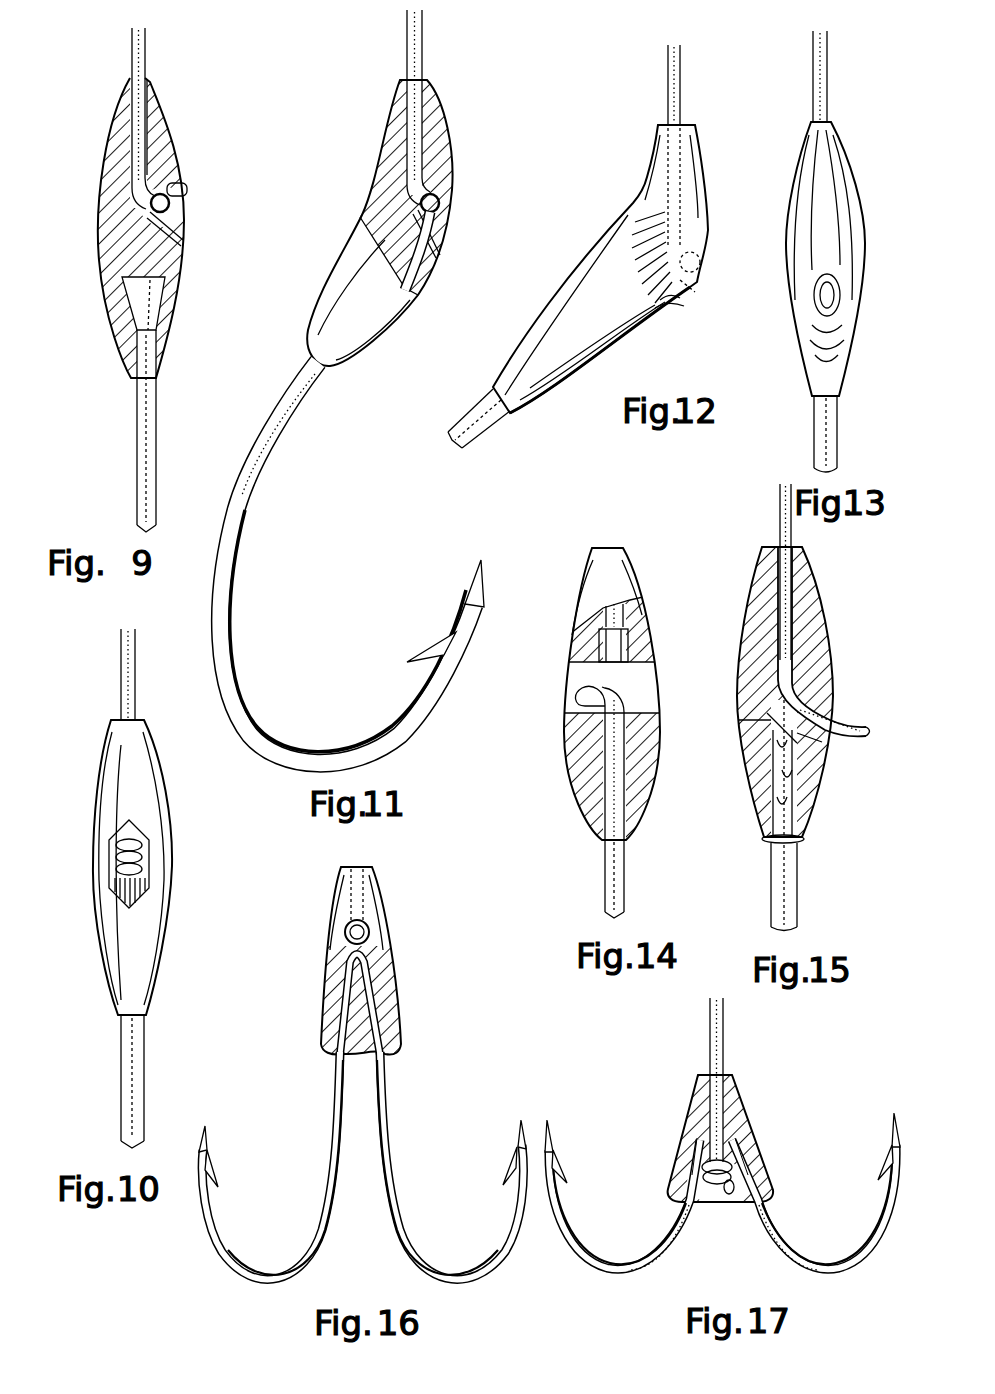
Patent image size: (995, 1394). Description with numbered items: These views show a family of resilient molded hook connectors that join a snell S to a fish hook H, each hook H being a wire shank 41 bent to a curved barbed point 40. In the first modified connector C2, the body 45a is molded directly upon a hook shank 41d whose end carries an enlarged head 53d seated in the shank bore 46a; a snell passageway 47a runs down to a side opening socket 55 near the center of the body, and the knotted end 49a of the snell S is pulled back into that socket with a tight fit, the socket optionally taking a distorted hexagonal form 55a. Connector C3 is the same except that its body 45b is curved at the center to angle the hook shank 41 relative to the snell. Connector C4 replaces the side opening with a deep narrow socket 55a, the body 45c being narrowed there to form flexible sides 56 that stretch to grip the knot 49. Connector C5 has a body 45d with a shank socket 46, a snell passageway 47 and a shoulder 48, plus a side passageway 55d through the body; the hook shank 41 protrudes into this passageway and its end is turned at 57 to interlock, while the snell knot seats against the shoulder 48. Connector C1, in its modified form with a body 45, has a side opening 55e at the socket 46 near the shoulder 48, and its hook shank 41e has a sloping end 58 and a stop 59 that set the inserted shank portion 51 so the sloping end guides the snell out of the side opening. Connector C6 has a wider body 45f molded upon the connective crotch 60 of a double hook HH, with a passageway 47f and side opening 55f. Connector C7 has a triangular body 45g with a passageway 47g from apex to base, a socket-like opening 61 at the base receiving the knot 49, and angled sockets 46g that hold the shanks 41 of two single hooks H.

In FIG. 9, the snell S is at (132, 50).
In FIG. 10, the snell S is at (121, 677).
In FIG. 11, the snell S is at (408, 47).
In FIG. 12, the snell S is at (668, 77).
In FIG. 13, the snell S is at (813, 66).
In FIG. 15, the snell S is at (779, 515).
In FIG. 17, the snell S is at (710, 1033).
In FIG. 9, the connector C2 is at (163, 100).
In FIG. 10, the connector C2 is at (92, 770).
In FIG. 11, the connector C3 is at (357, 213).
In FIG. 12, the connector C4 is at (650, 158).
In FIG. 13, the connector C4 is at (796, 178).
In FIG. 14, the connector C5 is at (564, 589).
In FIG. 15, the connector C1 is at (746, 586).
In FIG. 16, the connector C6 is at (335, 906).
In FIG. 17, the connector C7 is at (688, 1108).
In FIG. 11, the hook H is at (352, 487).
In FIG. 17, the hook H is at (722, 1192).
In FIG. 16, the double hook HH is at (403, 1242).
In FIG. 11, the barbed point 40 is at (400, 713).
In FIG. 17, the barbed point 40 is at (563, 1217).
In FIG. 11, the shank 41 is at (280, 423).
In FIG. 12, the shank 41 is at (491, 420).
In FIG. 13, the shank 41 is at (840, 442).
In FIG. 14, the shank 41 is at (618, 882).
In FIG. 17, the shank 41 is at (683, 1203).
In FIG. 9, the hook shank 41d is at (157, 435).
In FIG. 10, the hook shank 41d is at (145, 1042).
In FIG. 15, the hook shank 41e is at (790, 892).
In FIG. 15, the body 45 is at (746, 671).
In FIG. 9, the connector body 45a is at (110, 201).
In FIG. 10, the connector body 45a is at (150, 787).
In FIG. 11, the body 45b is at (340, 284).
In FIG. 12, the body 45c is at (607, 262).
In FIG. 13, the body 45c is at (800, 246).
In FIG. 14, the body 45d is at (572, 769).
In FIG. 16, the body 45f is at (331, 969).
In FIG. 17, the triangular body 45g is at (697, 1127).
In FIG. 14, the socket 46 is at (575, 649).
In FIG. 15, the socket 46 is at (818, 684).
In FIG. 9, the shank bore 46a is at (160, 342).
In FIG. 17, the angled socket 46g is at (683, 1170).
In FIG. 14, the snell passageway 47 is at (630, 608).
In FIG. 15, the snell passageway 47 is at (793, 567).
In FIG. 9, the snell passageway 47a is at (150, 125).
In FIG. 11, the snell passageway 47a is at (440, 112).
In FIG. 12, the snell passageway 47a is at (700, 131).
In FIG. 16, the passageway 47f is at (370, 882).
In FIG. 17, the passageway 47g is at (735, 1090).
In FIG. 14, the shoulder 48 is at (632, 641).
In FIG. 15, the shoulder 48 is at (820, 657).
In FIG. 17, the knot 49 is at (717, 1193).
In FIG. 9, the knotted end 49a is at (166, 190).
In FIG. 10, the knotted end 49a is at (142, 852).
In FIG. 11, the knotted end 49a is at (446, 195).
In FIG. 12, the knotted end 49a is at (700, 264).
In FIG. 15, the shank wire 51 is at (792, 780).
In FIG. 9, the enlarged head 53d is at (160, 288).
In FIG. 9, the side opening socket 55 is at (180, 223).
In FIG. 11, the side opening socket 55 is at (430, 232).
In FIG. 10, the socket 55a is at (147, 886).
In FIG. 12, the socket 55a is at (692, 297).
In FIG. 13, the socket 55a is at (841, 290).
In FIG. 14, the side passageway 55d is at (640, 702).
In FIG. 15, the side opening 55e is at (821, 717).
In FIG. 16, the side opening 55f is at (370, 931).
In FIG. 12, the sides 56 is at (686, 300).
In FIG. 13, the sides 56 is at (806, 316).
In FIG. 14, the turned shank end 57 is at (578, 694).
In FIG. 15, the sloping end 58 is at (749, 752).
In FIG. 15, the stop 59 is at (759, 843).
In FIG. 16, the connective crotch 60 is at (340, 1016).
In FIG. 17, the socket-like opening 61 is at (707, 1197).